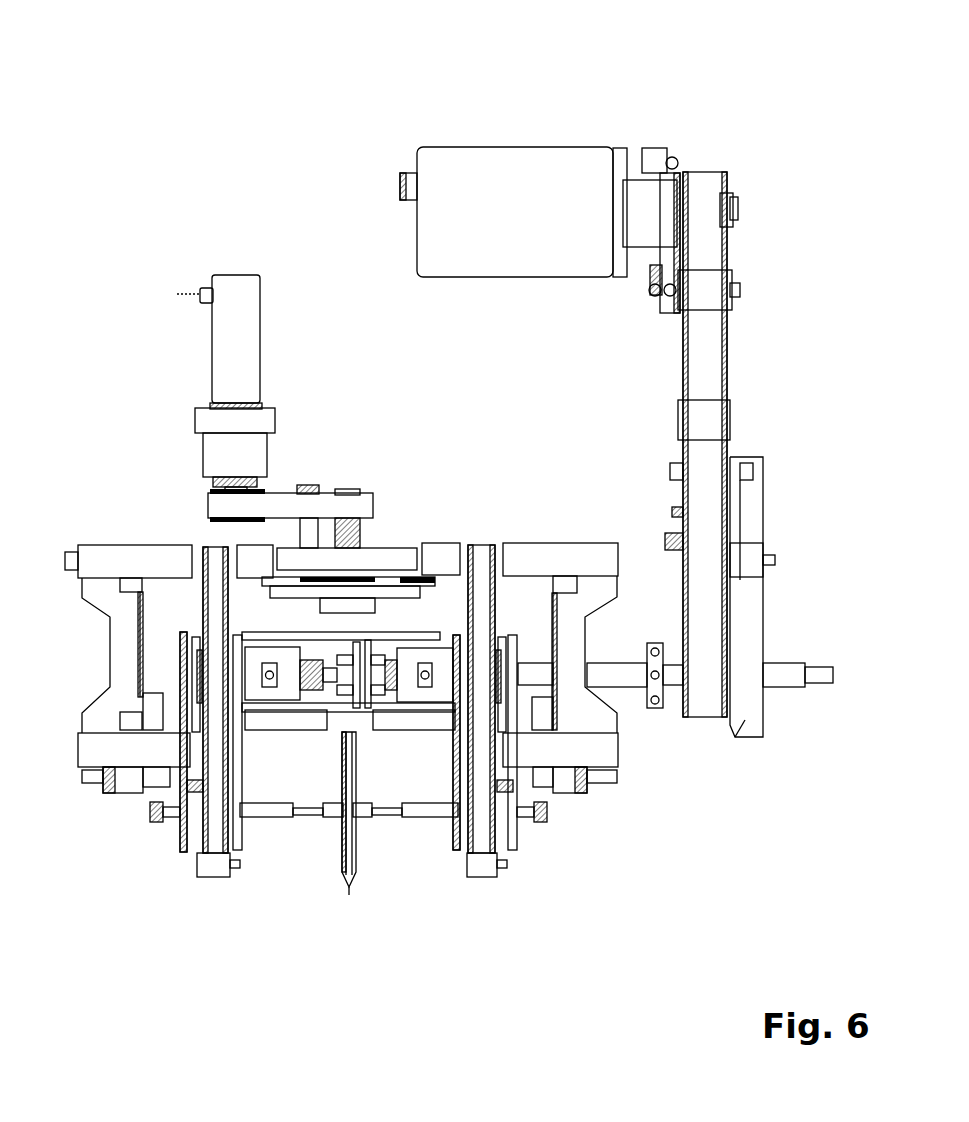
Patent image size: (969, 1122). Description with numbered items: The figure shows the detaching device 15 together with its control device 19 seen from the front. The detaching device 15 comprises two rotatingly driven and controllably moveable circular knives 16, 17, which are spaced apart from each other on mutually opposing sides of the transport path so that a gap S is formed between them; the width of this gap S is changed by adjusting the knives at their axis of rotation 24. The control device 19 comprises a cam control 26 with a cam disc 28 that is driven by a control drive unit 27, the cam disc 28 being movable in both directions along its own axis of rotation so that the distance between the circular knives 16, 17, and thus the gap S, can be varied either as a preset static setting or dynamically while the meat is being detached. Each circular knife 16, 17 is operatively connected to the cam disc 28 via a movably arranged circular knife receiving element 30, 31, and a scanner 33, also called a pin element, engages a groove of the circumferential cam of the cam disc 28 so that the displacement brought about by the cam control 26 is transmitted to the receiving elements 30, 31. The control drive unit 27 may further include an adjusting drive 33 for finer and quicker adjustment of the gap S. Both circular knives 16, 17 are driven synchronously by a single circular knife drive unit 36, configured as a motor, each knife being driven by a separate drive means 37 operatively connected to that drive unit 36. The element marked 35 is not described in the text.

The detaching device 15 is at (220, 170).
The circular knife 16 is at (344, 868).
The circular knife 17 is at (355, 868).
The control device 19 is at (598, 892).
The axis of rotation 24 is at (150, 812).
The cam control 26 is at (466, 462).
The control drive unit 27 is at (156, 340).
The cam disc 28 is at (378, 588).
The circular knife receiving element 30 is at (268, 806).
The circular knife receiving element 31 is at (438, 808).
The scanner 33 is at (284, 580).
The sensor head 35 is at (214, 458).
The circular knife drive unit 36 is at (646, 118).
The drive means 37 is at (215, 840).
The gap S is at (349, 893).